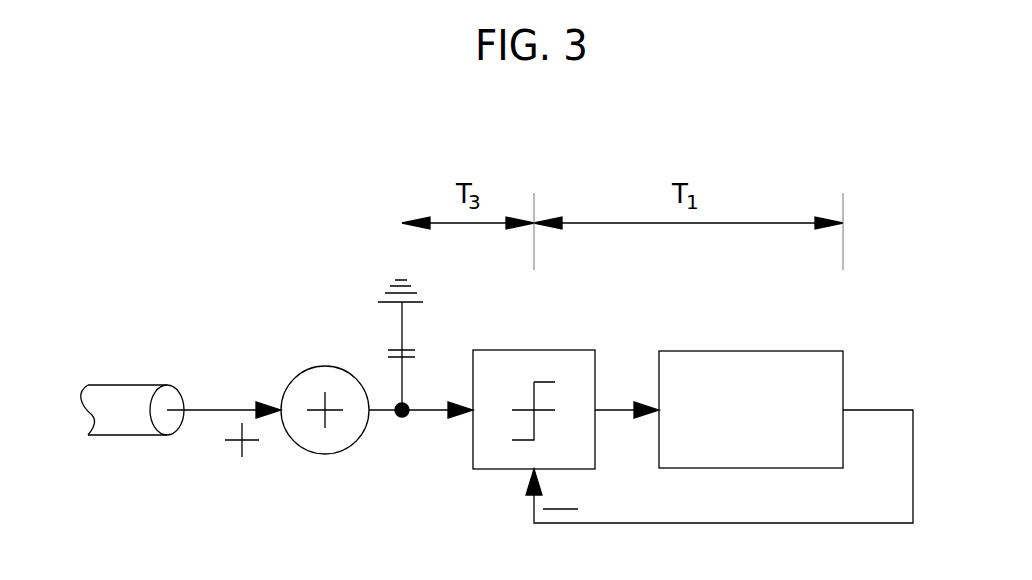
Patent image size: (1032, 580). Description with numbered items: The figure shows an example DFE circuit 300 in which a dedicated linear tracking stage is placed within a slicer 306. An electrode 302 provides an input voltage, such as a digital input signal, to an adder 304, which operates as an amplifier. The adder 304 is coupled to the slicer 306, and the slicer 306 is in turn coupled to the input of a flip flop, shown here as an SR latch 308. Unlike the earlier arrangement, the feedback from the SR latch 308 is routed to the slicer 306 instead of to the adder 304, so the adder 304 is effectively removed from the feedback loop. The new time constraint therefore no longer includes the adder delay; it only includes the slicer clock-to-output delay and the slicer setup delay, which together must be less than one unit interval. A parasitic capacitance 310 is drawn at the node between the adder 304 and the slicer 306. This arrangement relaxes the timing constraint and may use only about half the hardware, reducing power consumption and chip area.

The DFE circuit 300 is at (896, 146).
The electrode 302 is at (128, 385).
The adder 304 is at (325, 367).
The slicer 306 is at (573, 350).
The SR latch 308 is at (750, 351).
The parasitic capacitor 310 is at (410, 348).